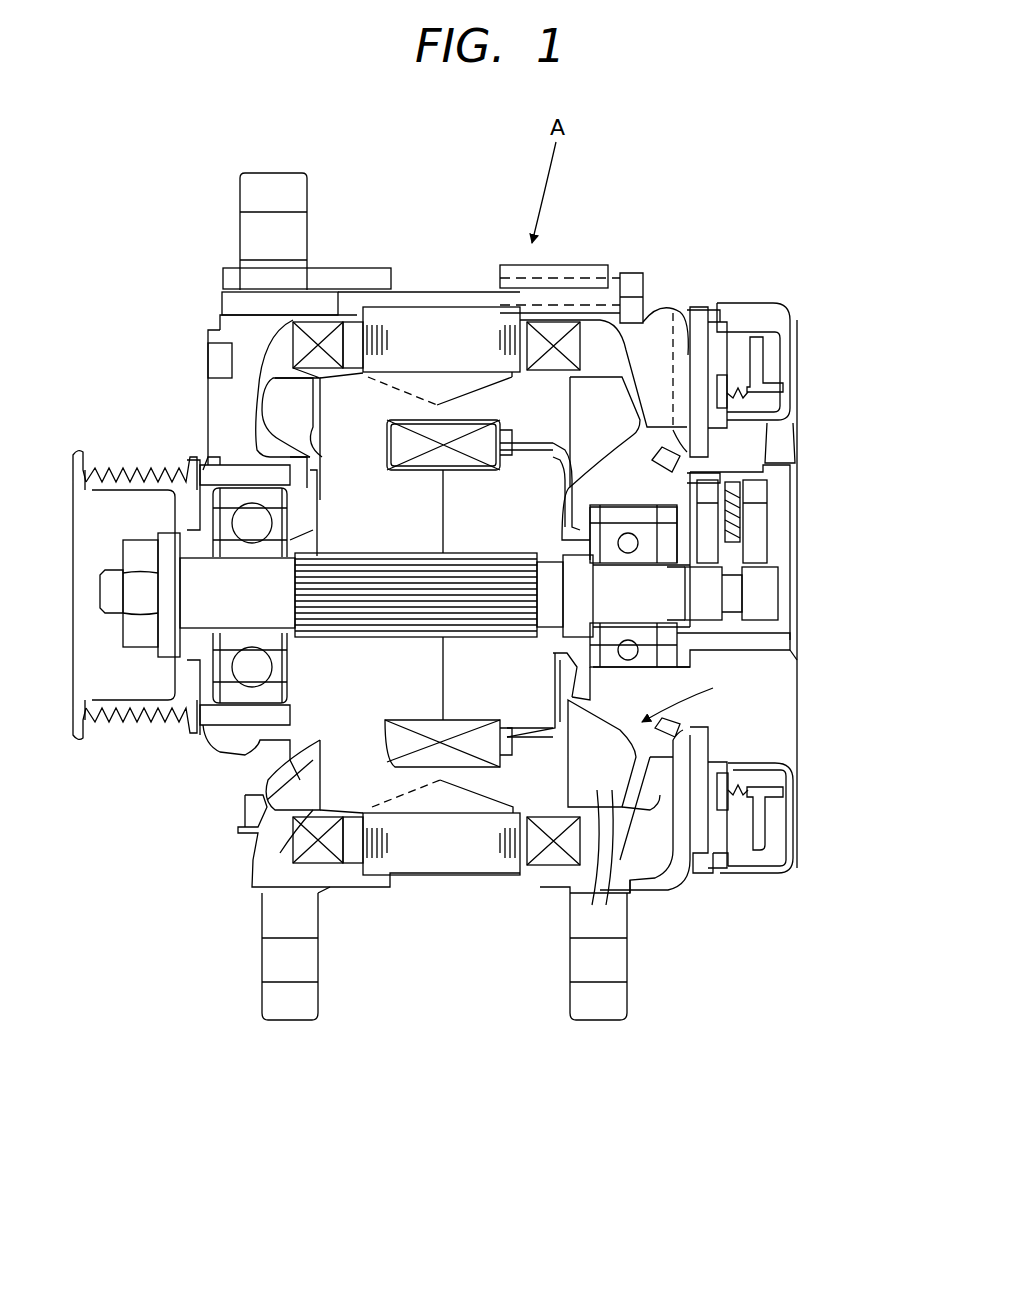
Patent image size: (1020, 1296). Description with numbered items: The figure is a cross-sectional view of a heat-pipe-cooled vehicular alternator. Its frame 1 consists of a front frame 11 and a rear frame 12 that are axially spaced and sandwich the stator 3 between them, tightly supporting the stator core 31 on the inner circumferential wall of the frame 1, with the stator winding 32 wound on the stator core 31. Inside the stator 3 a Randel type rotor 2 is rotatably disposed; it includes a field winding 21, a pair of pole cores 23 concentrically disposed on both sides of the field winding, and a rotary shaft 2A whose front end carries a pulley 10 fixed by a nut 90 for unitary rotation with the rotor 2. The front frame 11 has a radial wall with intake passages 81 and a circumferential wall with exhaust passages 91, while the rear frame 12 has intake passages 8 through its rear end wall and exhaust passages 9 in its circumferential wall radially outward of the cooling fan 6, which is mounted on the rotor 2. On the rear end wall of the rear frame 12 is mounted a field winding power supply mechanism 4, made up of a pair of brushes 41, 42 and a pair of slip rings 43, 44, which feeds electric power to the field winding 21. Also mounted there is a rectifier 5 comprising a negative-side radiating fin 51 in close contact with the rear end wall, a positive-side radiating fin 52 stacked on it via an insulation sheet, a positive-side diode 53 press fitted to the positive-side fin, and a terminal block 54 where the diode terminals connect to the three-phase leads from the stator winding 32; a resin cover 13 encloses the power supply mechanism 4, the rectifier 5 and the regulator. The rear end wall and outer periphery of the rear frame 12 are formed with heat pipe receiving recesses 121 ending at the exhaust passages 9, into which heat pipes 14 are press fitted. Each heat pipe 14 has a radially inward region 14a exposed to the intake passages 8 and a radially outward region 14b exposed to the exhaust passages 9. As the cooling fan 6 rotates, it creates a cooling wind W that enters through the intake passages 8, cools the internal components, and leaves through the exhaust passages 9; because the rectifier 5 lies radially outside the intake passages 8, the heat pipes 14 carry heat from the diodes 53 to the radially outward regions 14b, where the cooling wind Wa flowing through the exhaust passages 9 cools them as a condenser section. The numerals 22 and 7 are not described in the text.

The frame 1 is at (205, 320).
The rotor 2 is at (447, 380).
The rotary shaft 2A is at (215, 585).
The field winding 21 is at (440, 757).
The field coil 22 is at (390, 780).
The pole cores 23 is at (515, 780).
The stator 3 is at (437, 300).
The stator iron core 31 is at (400, 325).
The stator winding 32 is at (577, 345).
The field winding power supply mechanism 4 is at (752, 490).
The brush 41 is at (752, 522).
The brush 42 is at (705, 540).
The slip ring 43 is at (755, 597).
The slip ring 44 is at (708, 607).
The rectifier 5 is at (695, 890).
The negative-side radiating fin 51 is at (705, 865).
The positive-side radiating fin 52 is at (740, 840).
The positive-side diode 53 is at (760, 845).
The terminal block 54 is at (790, 820).
The cooling fan 6 is at (555, 895).
The front cooling fan 7 is at (290, 793).
The intake passages 8 is at (676, 690).
The exhaust passages 9 is at (637, 847).
The pulley 10 is at (142, 717).
The front frame 11 is at (227, 430).
The rear frame 12 is at (653, 355).
The heat pipe receiving recesses 121 is at (678, 318).
The resin cover 13 is at (800, 327).
The heat pipes 14 is at (667, 305).
The radially inward regions 14a is at (700, 462).
The radially outward regions 14b is at (652, 897).
The intake passages 81 is at (232, 775).
The nut 90 is at (140, 605).
The exhaust passages 91 is at (340, 877).
The cooling wind W is at (800, 690).
The cooling wind Wa is at (608, 922).